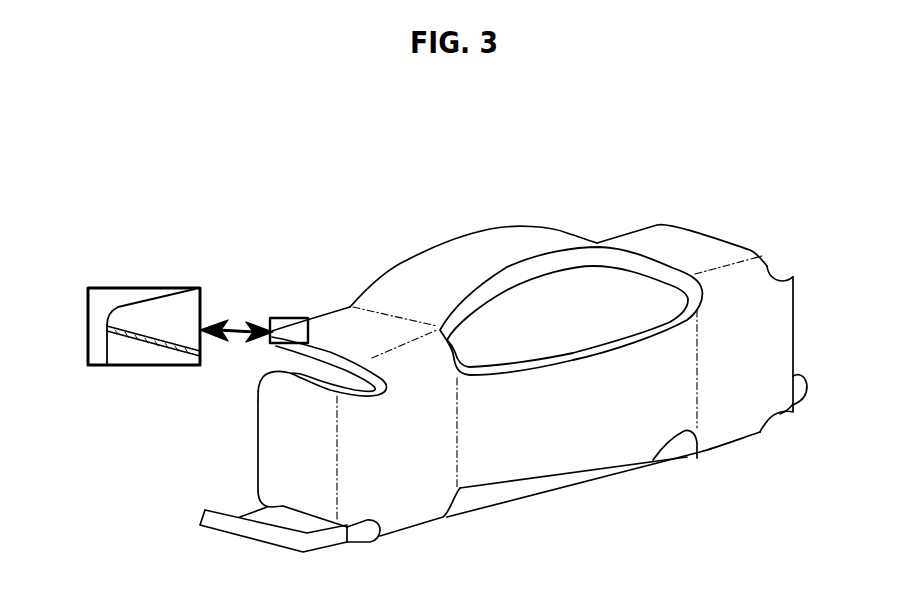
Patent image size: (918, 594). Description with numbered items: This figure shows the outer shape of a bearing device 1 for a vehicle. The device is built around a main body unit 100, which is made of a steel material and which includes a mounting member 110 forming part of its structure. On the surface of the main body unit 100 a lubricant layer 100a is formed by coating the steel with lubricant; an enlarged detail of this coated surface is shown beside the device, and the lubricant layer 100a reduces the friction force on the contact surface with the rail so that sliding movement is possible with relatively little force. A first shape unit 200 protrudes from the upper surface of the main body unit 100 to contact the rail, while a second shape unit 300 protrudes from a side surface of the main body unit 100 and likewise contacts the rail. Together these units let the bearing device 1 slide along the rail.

The bearing device 1 is at (253, 413).
The main body unit 100 is at (777, 337).
The lubricant layer 100a is at (163, 310).
The mounting member 110 is at (267, 447).
The first shape unit 200 is at (505, 242).
The second shape unit 300 is at (593, 437).